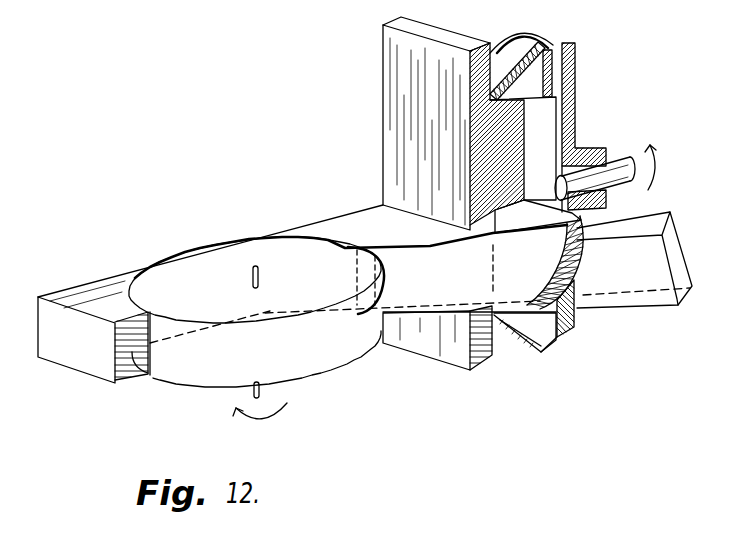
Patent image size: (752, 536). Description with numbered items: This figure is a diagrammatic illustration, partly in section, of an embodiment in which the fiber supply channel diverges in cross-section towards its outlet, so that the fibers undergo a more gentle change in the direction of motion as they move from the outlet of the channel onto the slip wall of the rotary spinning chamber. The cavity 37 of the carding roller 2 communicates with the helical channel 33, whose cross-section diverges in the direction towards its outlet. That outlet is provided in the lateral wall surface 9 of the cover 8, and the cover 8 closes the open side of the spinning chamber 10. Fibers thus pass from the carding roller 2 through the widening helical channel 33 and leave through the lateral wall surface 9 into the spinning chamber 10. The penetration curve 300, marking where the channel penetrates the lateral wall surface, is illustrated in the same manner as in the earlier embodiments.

The carding roller 2 is at (193, 272).
The cover 8 is at (480, 52).
The lateral wall surface 9 is at (577, 216).
The spinning chamber 10 is at (553, 58).
The helical channel 33 is at (407, 298).
The cavity 37 is at (350, 249).
The penetration curve 300 is at (580, 283).